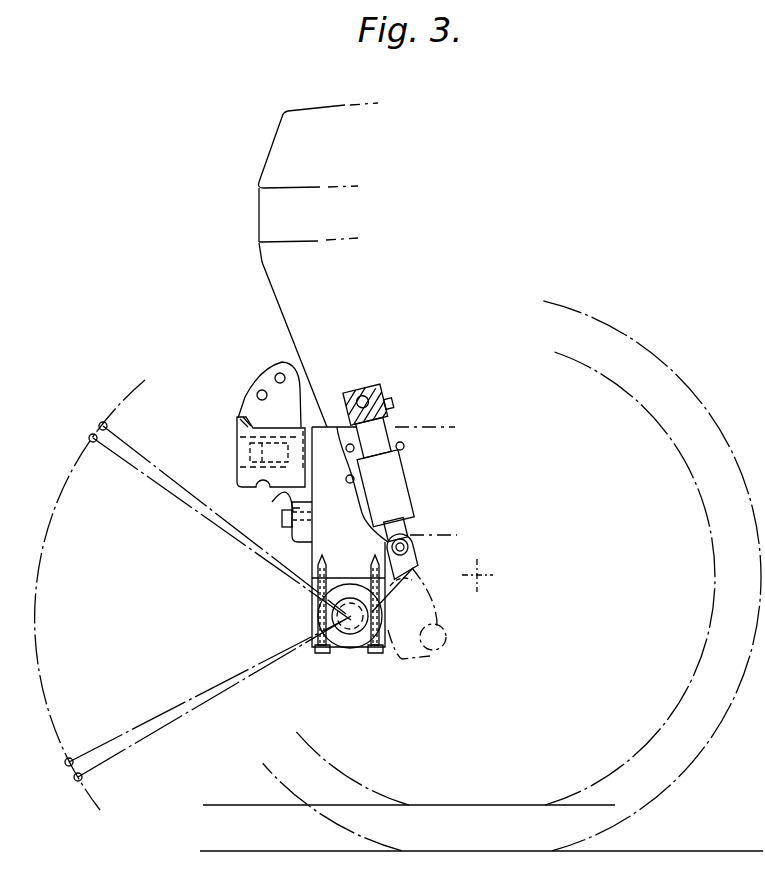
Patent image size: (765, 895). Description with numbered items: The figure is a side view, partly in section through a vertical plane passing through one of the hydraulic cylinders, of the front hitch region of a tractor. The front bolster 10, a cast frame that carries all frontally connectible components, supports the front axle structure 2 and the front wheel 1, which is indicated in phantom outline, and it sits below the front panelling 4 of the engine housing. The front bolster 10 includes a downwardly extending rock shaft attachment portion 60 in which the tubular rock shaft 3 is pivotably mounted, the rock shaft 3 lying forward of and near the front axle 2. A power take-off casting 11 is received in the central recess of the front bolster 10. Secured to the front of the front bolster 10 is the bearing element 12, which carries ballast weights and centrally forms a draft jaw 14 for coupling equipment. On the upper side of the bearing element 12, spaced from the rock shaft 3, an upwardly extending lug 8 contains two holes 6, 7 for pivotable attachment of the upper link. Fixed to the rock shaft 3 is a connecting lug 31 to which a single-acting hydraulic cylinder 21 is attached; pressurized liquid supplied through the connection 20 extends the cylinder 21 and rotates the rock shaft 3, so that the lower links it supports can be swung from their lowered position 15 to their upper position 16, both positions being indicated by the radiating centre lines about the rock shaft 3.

The front wheel 1 is at (652, 355).
The front axle structure 2 is at (482, 571).
The rock shaft 3 is at (352, 643).
The front panelling 4 is at (262, 262).
The hole 6 is at (275, 376).
The hole 7 is at (257, 393).
The lug 8 is at (274, 362).
The front bolster 10 is at (384, 540).
The power take-off casting 11 is at (300, 538).
The bearing element 12 is at (292, 472).
The draft jaw 14 is at (233, 433).
The lowered position 15 is at (133, 732).
The upper position 16 is at (100, 423).
The connection 20 is at (388, 385).
The hydraulic cylinder 21 is at (408, 474).
The connecting lug 31 is at (431, 548).
The rock shaft attachment portion 60 is at (314, 612).